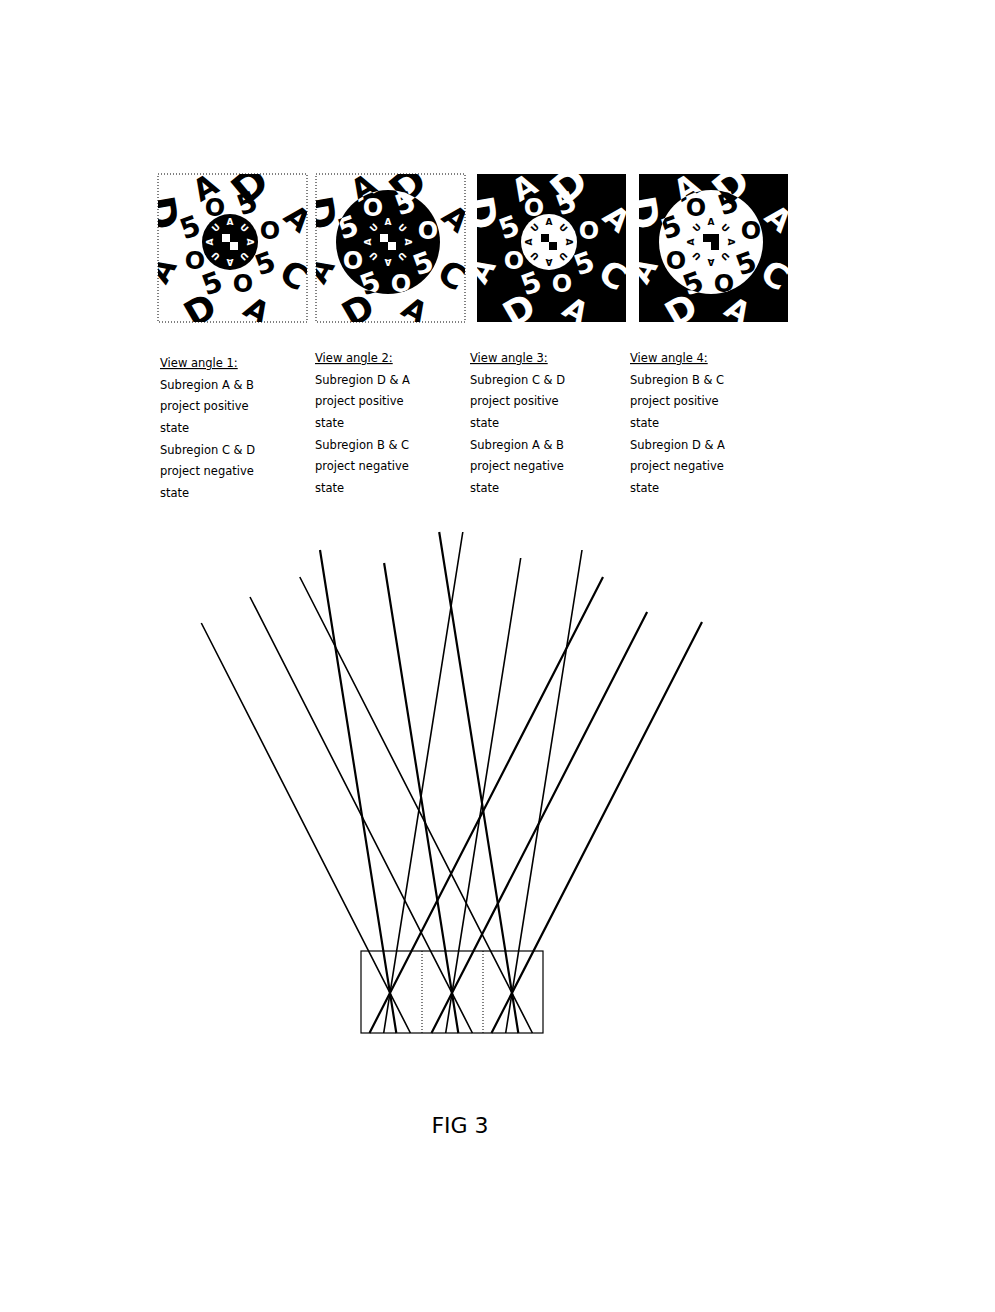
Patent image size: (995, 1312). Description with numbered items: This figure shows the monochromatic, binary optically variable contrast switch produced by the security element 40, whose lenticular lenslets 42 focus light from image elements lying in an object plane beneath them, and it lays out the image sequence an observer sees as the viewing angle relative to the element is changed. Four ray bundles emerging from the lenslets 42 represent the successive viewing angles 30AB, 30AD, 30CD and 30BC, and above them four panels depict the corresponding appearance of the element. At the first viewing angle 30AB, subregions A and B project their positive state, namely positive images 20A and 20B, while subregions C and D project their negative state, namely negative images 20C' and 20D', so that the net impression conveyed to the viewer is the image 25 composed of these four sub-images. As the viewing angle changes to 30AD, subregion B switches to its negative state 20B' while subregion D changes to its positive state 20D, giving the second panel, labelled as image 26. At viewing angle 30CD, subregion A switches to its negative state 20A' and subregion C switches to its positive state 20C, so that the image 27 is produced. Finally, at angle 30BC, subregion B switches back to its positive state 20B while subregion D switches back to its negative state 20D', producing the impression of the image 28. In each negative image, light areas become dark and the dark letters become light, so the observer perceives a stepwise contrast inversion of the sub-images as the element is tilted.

The positive image of subregion A 20A is at (277, 167).
The positive image of subregion B 20B is at (408, 187).
The positive image of subregion C 20C is at (664, 185).
The positive image of subregion D 20D is at (493, 299).
The negative image of subregion A 20A' is at (590, 170).
The negative image of subregion B 20B' is at (495, 169).
The negative image of subregion C 20C' is at (241, 209).
The negative image of subregion D 20D' is at (520, 241).
The image 25 is at (163, 188).
The image at view angle 2 26 is at (318, 174).
The image 27 is at (624, 174).
The image 28 is at (790, 184).
The first viewing angle 30AB is at (366, 790).
The second viewing angle 30AD is at (419, 776).
The third viewing angle 30CD is at (483, 772).
The fourth viewing angle 30BC is at (536, 799).
The security element 40 is at (306, 1008).
The lenticular lenslets 42 is at (362, 958).